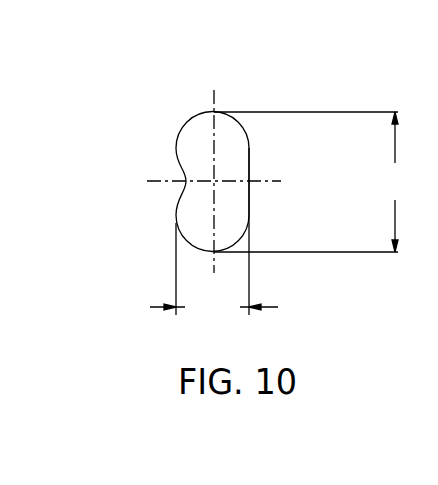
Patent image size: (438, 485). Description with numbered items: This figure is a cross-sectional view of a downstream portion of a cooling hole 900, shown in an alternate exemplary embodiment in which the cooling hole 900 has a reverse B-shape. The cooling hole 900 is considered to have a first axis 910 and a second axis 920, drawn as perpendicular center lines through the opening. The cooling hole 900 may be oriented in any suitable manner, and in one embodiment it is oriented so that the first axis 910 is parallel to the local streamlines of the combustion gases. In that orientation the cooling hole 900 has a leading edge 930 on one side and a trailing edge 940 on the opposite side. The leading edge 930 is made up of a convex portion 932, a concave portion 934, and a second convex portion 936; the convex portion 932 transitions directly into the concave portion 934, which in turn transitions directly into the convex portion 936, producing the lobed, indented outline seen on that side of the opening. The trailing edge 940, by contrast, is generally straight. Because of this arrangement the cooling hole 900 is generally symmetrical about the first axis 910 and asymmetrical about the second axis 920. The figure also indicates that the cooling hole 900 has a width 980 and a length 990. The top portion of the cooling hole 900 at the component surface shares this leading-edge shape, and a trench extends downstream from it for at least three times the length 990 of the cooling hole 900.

The cooling hole 900 is at (178, 77).
The first axis 910 is at (272, 182).
The second axis 920 is at (215, 92).
The leading edge 930 is at (175, 141).
The convex portion 932 is at (184, 121).
The concave portion 934 is at (185, 185).
The convex portion 936 is at (176, 222).
The trailing edge 940 is at (251, 148).
The width 980 is at (316, 182).
The length 990 is at (214, 235).